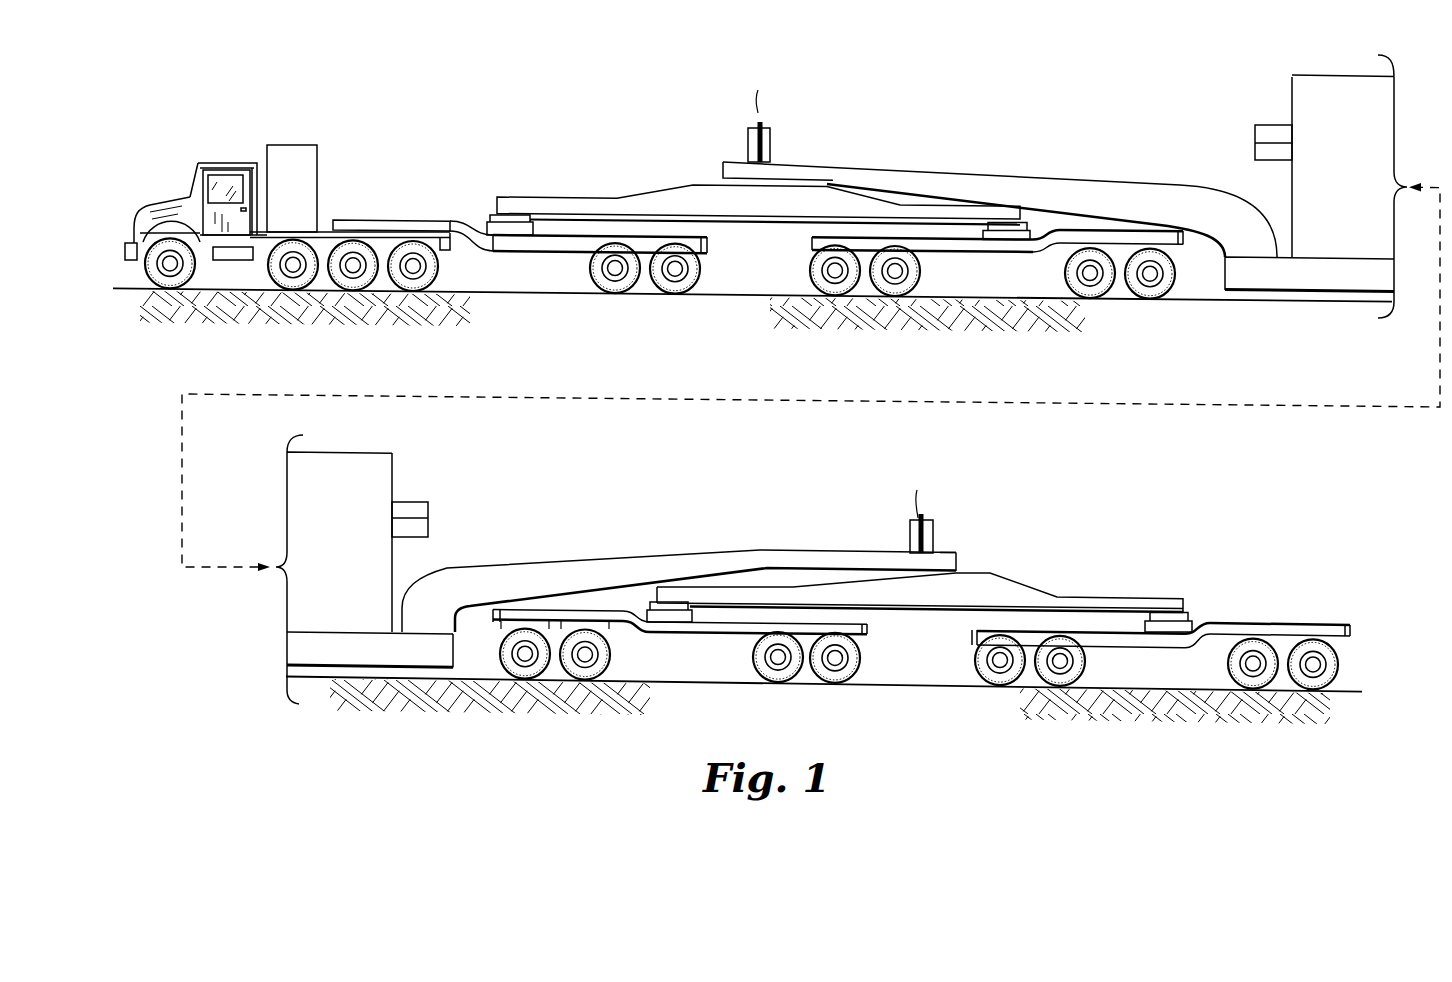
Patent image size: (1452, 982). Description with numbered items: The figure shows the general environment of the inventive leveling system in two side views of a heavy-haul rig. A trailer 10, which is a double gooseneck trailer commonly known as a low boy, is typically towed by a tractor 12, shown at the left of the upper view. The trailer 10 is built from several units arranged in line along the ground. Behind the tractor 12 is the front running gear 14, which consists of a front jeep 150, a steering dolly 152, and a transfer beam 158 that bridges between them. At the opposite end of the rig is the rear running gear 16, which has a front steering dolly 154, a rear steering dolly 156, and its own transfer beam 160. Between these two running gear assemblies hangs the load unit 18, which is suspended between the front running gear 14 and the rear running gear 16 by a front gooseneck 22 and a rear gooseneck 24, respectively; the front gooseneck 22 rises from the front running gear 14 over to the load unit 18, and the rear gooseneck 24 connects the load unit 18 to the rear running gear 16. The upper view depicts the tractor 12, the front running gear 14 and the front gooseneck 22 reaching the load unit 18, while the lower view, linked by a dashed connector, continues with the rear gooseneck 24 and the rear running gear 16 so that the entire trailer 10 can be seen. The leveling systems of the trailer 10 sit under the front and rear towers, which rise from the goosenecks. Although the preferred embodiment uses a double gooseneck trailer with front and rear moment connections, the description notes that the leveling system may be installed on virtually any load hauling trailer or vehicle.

The trailer 10 is at (1124, 158).
The tractor 12 is at (320, 164).
The front running gear 14 is at (657, 186).
The rear running gear 16 is at (1030, 582).
The load unit 18 is at (1303, 294).
The front gooseneck 22 is at (855, 163).
The rear gooseneck 24 is at (793, 549).
The front jeep 150 is at (548, 252).
The steering dolly 152 is at (978, 254).
The front steering dolly 154 is at (697, 634).
The rear steering dolly 156 is at (1157, 644).
The transfer beam 158 is at (533, 196).
The transfer beam 160 is at (1167, 595).